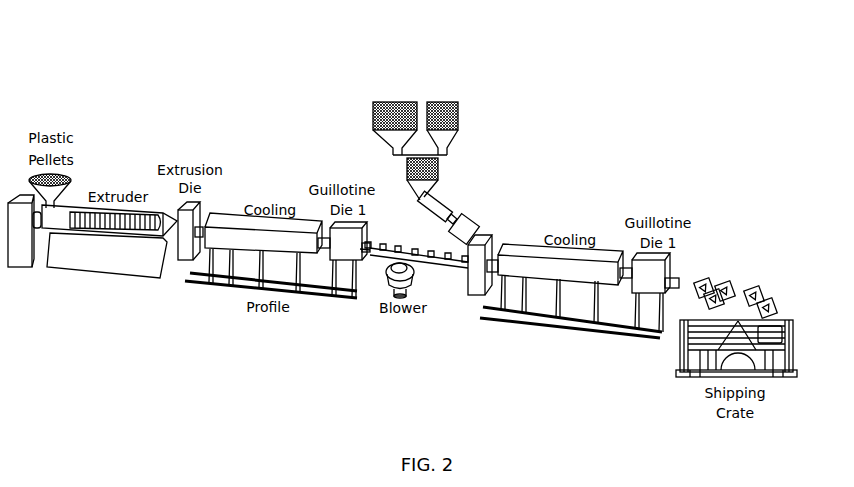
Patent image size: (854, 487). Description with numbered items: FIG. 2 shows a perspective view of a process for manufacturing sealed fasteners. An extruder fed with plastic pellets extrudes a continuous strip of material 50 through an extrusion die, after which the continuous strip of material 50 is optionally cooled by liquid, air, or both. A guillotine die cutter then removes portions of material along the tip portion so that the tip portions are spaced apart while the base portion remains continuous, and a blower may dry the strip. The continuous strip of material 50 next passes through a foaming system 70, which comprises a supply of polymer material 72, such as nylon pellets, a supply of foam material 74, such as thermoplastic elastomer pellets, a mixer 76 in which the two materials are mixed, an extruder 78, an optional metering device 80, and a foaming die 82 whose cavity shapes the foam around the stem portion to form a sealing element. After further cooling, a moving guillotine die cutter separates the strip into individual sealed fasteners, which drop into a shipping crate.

The foaming system 70 is at (375, 68).
The supply of polymer material 72 is at (375, 110).
The supply of foam material 74 is at (458, 112).
The mixer 76 is at (438, 167).
The extruder 78 is at (438, 203).
The metering device 80 is at (475, 222).
The foaming die 82 is at (477, 296).
The continuous strip of material 50 is at (375, 268).